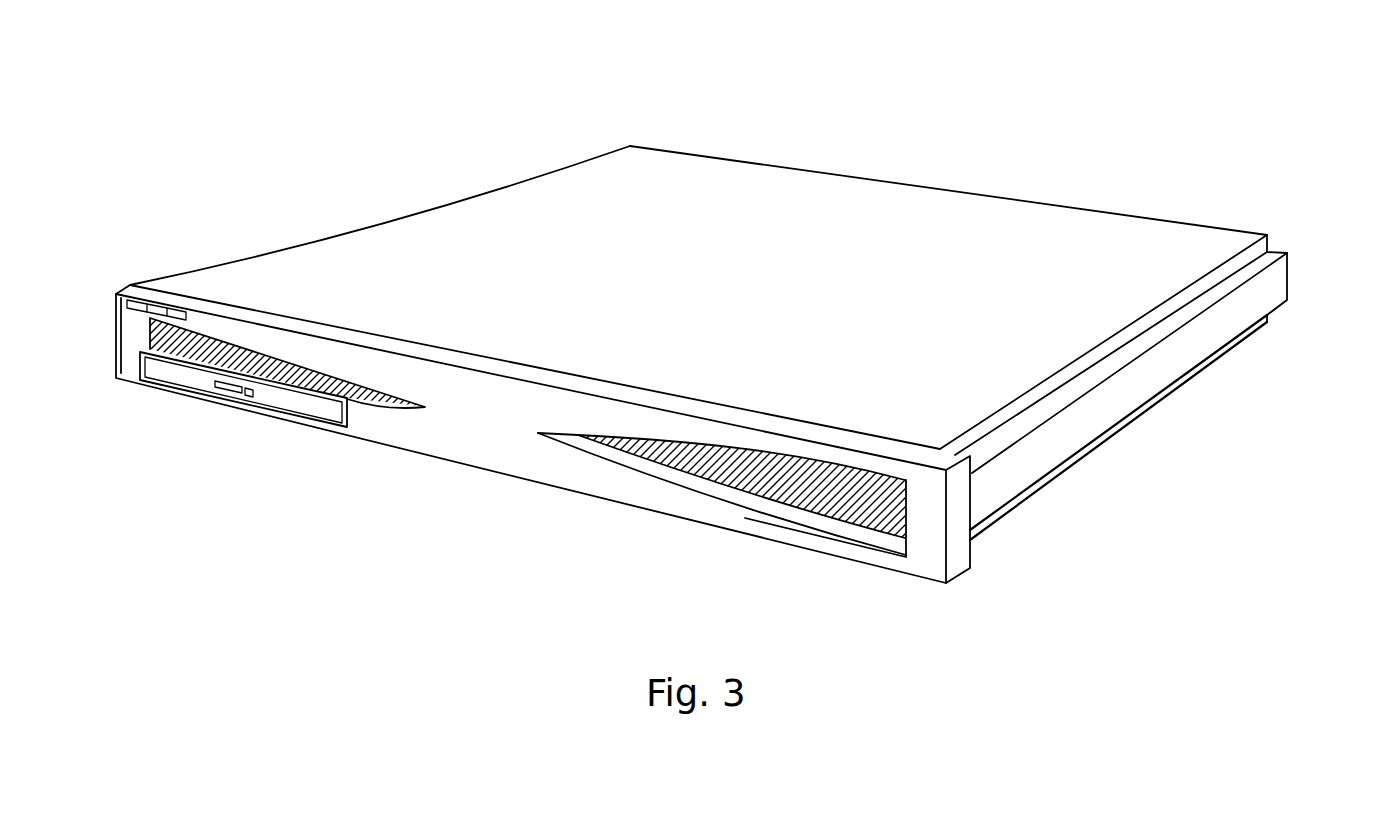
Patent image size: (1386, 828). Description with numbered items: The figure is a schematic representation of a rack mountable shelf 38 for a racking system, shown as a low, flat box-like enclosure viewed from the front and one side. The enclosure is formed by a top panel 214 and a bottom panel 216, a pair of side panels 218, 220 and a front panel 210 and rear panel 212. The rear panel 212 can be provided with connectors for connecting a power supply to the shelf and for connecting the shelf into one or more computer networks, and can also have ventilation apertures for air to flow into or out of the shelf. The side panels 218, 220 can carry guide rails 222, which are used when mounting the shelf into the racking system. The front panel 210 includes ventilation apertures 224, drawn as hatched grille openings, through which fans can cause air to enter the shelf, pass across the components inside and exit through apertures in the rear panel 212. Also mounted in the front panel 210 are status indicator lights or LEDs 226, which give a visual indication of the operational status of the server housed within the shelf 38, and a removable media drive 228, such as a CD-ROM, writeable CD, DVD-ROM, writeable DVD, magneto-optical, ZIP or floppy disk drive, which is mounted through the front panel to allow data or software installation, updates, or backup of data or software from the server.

The shelf 38 is at (360, 120).
The front panel 210 is at (480, 443).
The rear panel 212 is at (1020, 195).
The top panel 214 is at (815, 197).
The bottom panel 216 is at (1082, 477).
The side panel 218 is at (397, 213).
The side panel 220 is at (1185, 386).
The guide rails 222 is at (1290, 280).
The ventilation apertures 224 is at (740, 507).
The status indicator lights or LEDs 226 is at (150, 298).
The removable media drive 228 is at (263, 402).